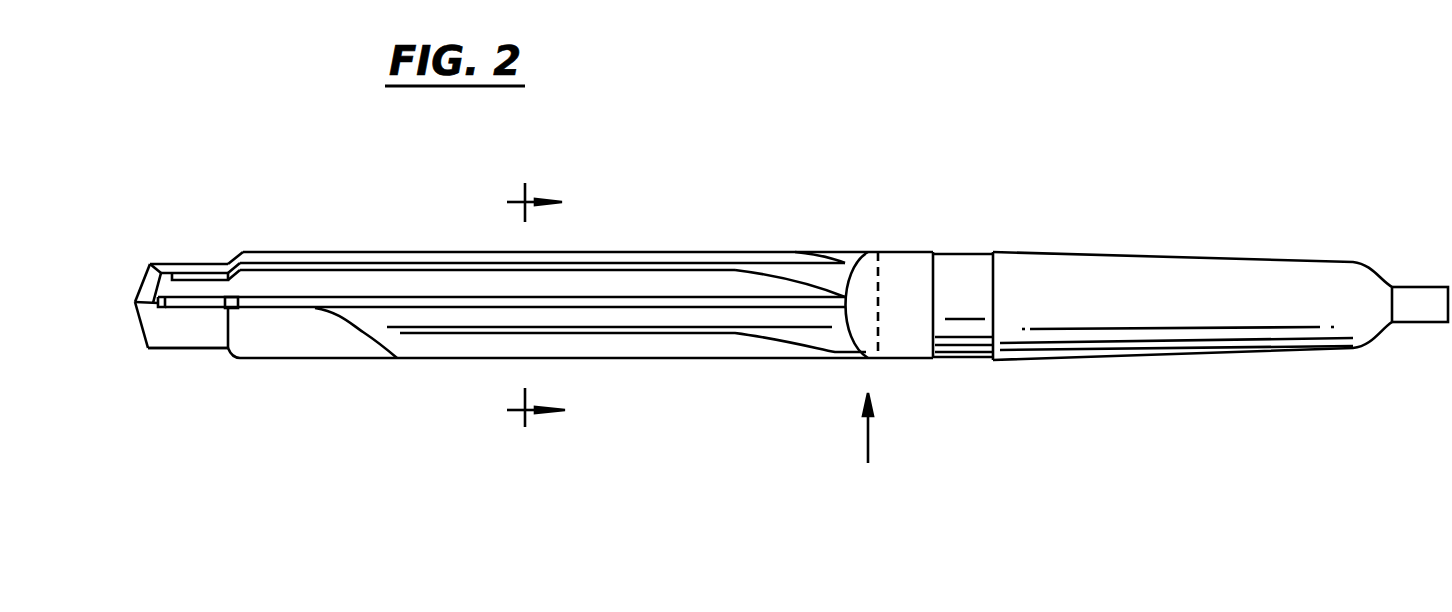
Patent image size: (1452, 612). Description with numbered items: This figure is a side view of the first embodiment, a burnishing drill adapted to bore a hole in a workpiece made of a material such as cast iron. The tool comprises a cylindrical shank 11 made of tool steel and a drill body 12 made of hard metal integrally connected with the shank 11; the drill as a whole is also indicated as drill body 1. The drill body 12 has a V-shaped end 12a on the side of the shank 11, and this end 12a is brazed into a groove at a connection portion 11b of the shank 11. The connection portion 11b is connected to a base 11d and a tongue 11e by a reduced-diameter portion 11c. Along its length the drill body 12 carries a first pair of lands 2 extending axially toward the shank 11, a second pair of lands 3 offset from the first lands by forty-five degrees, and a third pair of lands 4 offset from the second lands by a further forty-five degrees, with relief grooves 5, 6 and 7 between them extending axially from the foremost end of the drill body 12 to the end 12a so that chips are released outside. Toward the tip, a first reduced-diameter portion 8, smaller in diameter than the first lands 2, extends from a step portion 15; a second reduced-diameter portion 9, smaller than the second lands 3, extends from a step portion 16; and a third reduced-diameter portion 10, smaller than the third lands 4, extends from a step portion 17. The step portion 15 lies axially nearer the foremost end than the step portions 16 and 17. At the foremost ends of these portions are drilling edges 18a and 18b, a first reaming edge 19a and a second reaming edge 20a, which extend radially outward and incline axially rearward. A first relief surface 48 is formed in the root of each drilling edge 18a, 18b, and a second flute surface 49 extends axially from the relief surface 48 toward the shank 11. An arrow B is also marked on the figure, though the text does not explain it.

The drill body 1 is at (1152, 232).
The first pair of lands 2 is at (648, 251).
The second pair of lands 3 is at (612, 268).
The third pair of lands 4 is at (595, 305).
The relief groove 5 is at (705, 255).
The relief groove 6 is at (752, 284).
The relief groove 7 is at (686, 350).
The first reduced-diameter portion 8 is at (185, 263).
The second reduced-diameter portion 9 is at (203, 275).
The third reduced-diameter portion 10 is at (191, 307).
The shank 11 is at (1447, 508).
The connection portion 11b is at (906, 268).
The reduced-diameter portion 11c is at (965, 330).
The base 11d is at (1187, 333).
The tongue 11e is at (1415, 313).
The drill body 12 is at (128, 510).
The V-shaped end 12a is at (831, 329).
The step portion 15 is at (230, 254).
The step portion 16 is at (256, 252).
The step portion 17 is at (232, 308).
The drilling edge 18a is at (138, 286).
The drilling edge 18b is at (138, 322).
The first reaming edge 19a is at (150, 270).
The second reaming edge 20a is at (176, 263).
The first relief surface 48 is at (136, 310).
The second flute surface 49 is at (363, 333).
The direction B is at (870, 440).